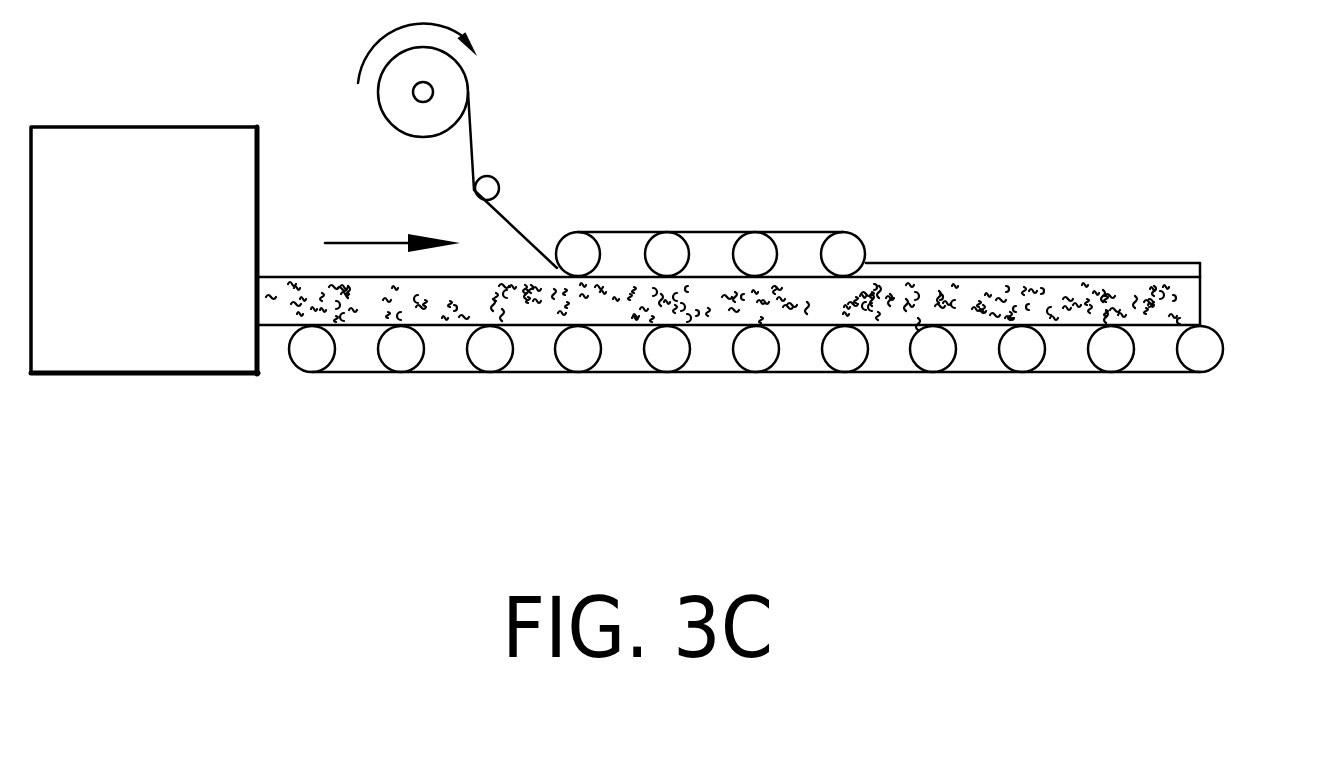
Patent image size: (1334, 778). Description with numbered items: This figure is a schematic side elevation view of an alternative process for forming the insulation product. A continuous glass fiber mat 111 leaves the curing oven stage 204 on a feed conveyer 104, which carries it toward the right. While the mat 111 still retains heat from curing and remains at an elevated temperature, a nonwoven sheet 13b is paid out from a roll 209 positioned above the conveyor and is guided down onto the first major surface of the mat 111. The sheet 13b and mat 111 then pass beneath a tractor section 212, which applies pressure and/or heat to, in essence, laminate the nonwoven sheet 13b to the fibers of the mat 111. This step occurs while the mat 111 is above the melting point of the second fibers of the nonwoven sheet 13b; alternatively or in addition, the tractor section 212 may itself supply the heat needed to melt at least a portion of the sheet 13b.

The curing oven stage 204 is at (148, 375).
The roll 209 is at (412, 138).
The nonwoven sheet 13b is at (472, 140).
The tractor section 212 is at (710, 232).
The mat 111 is at (1195, 285).
The feed conveyer 104 is at (705, 348).